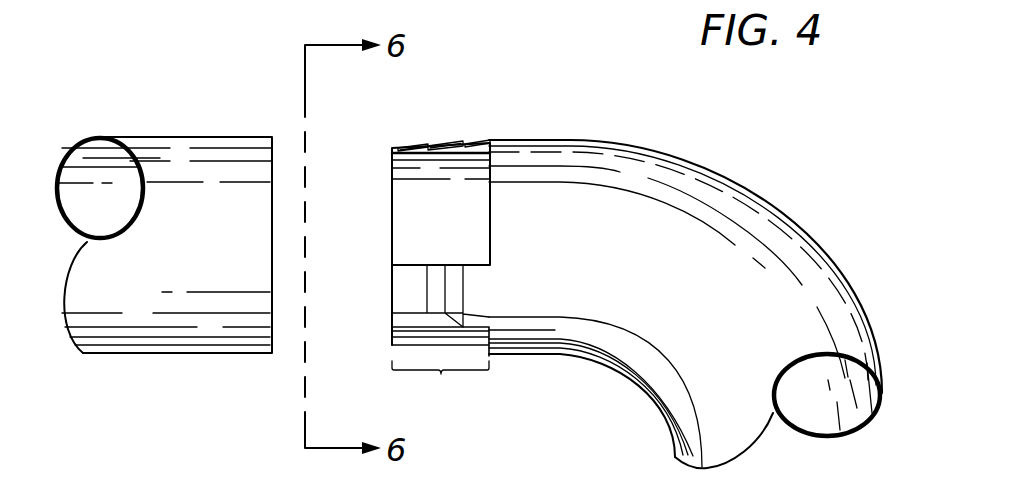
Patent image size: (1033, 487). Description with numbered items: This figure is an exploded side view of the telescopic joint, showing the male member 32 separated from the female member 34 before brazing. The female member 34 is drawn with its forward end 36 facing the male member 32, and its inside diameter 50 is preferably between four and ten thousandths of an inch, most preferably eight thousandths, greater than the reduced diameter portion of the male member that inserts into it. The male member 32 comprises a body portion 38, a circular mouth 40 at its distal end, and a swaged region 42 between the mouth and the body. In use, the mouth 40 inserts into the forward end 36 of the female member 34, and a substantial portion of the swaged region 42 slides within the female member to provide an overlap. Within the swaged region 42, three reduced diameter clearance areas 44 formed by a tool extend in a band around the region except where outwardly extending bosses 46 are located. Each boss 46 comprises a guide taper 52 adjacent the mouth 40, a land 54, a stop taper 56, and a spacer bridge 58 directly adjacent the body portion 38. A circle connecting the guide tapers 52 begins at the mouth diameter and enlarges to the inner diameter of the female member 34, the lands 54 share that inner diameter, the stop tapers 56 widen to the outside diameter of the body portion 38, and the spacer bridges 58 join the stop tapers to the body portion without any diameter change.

The male member 32 is at (616, 128).
The female member 34 is at (186, 110).
The forward end 36 is at (274, 167).
The body portion 38 is at (703, 205).
The mouth 40 is at (392, 204).
The swaged region 42 is at (441, 374).
The clearance areas 44 is at (400, 330).
The bosses 46 is at (442, 138).
The inside diameter 50 is at (88, 163).
The guide taper 52 is at (405, 148).
The land 54 is at (437, 147).
The stop taper 56 is at (455, 145).
The spacer bridge 58 is at (475, 143).